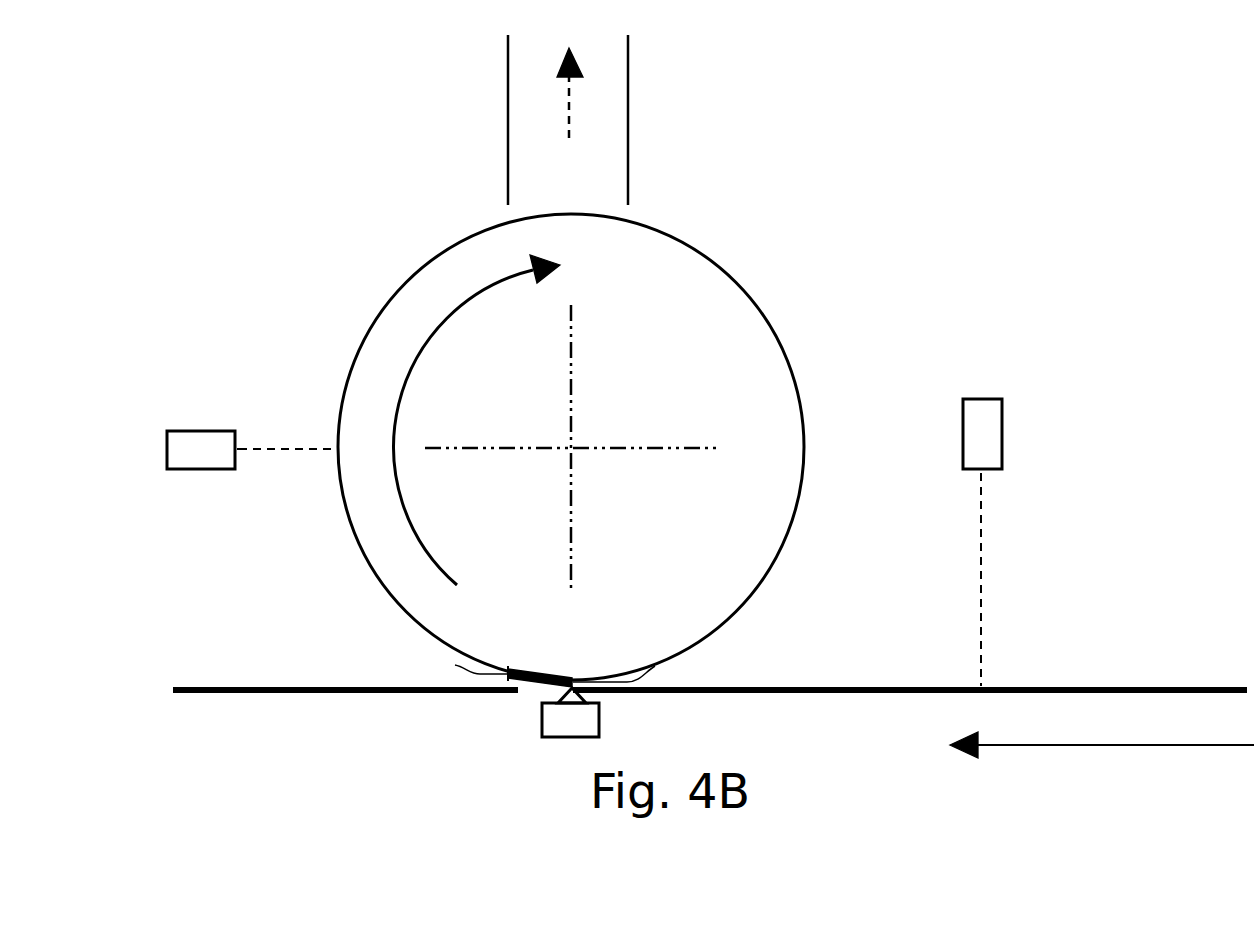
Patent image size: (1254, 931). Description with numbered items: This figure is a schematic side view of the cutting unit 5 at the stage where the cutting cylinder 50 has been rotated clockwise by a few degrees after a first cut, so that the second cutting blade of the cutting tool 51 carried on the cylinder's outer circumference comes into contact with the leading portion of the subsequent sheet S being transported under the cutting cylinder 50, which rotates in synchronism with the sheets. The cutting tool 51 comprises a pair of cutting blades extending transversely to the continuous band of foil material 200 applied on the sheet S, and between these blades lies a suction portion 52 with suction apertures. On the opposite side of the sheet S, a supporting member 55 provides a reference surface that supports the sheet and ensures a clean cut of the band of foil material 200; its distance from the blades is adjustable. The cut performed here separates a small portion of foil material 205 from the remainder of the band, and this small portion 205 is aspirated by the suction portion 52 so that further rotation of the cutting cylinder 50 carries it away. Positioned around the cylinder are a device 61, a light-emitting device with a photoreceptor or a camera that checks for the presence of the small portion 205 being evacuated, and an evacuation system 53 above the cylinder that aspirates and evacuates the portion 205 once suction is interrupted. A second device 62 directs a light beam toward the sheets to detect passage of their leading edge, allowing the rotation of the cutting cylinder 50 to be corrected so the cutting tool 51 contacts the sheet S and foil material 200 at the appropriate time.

The cutting unit 5 is at (910, 171).
The cutting cylinder 50 is at (716, 272).
The cutting tool 51 is at (655, 666).
The suction portion 52 is at (543, 679).
The evacuation system 53 is at (508, 112).
The supporting member 55 is at (548, 725).
The device 61 is at (199, 440).
The second device 62 is at (972, 436).
The band of foil material 200 is at (1090, 686).
The small portion of foil material 205 is at (537, 686).
The sheet S is at (217, 693).